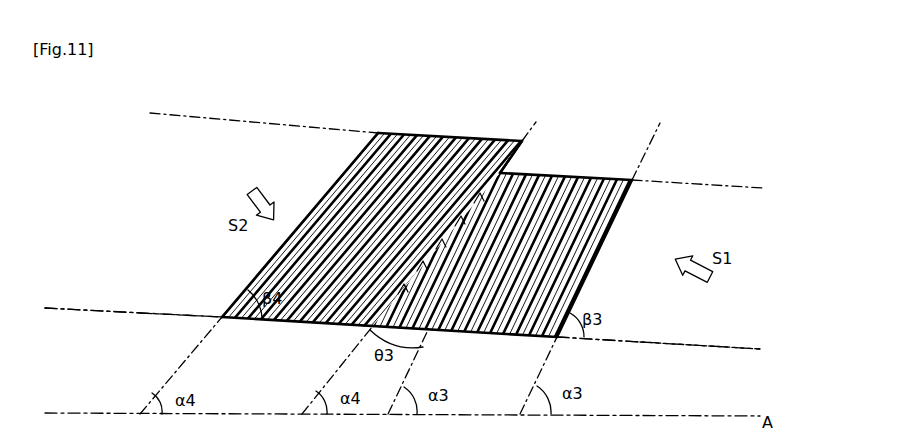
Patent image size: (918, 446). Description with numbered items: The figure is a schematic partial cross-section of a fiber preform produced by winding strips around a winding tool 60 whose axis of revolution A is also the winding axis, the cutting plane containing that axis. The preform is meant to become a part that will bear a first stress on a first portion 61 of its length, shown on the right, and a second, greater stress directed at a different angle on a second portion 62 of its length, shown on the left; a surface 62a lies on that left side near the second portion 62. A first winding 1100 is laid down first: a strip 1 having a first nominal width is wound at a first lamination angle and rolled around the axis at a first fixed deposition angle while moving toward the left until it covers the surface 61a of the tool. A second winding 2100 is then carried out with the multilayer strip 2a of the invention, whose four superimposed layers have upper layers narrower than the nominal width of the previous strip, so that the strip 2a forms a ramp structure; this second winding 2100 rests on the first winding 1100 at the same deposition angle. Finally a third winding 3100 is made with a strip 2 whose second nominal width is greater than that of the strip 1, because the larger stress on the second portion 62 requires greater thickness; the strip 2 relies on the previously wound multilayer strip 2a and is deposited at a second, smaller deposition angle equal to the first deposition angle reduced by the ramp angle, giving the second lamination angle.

The strip 1 is at (631, 228).
The strip 2 is at (322, 175).
The multilayer strip 2a is at (520, 140).
The winding tool 60 is at (743, 363).
The first portion 61 is at (690, 363).
The surface of the tool 61a is at (620, 341).
The second portion 62 is at (163, 352).
The second base edge 62a is at (188, 317).
The first winding 1100 is at (592, 178).
The second winding 2100 is at (503, 172).
The third winding 3100 is at (448, 139).